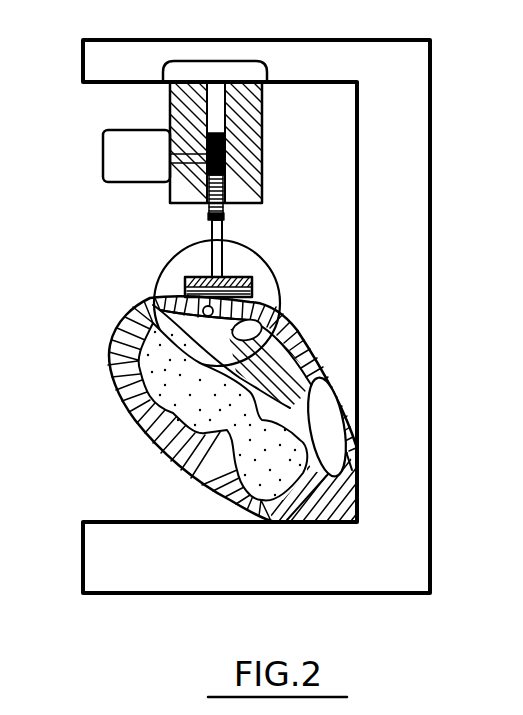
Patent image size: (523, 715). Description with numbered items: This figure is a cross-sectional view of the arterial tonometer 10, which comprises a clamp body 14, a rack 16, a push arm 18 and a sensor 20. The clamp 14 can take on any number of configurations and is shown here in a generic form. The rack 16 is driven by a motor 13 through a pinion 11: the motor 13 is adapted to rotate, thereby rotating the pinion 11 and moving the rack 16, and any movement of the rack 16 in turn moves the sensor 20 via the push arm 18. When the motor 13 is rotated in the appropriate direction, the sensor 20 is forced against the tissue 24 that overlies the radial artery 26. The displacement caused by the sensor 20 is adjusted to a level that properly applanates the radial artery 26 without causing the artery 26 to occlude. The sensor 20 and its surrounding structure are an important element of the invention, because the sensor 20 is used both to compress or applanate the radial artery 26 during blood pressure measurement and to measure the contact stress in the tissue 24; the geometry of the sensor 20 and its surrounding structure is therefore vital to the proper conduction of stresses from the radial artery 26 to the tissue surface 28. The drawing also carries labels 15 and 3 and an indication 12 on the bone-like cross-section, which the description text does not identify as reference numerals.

The arterial tonometer 10 is at (272, 34).
The pinion 11 is at (221, 134).
The bone 12 is at (122, 429).
The motor 13 is at (103, 158).
The clamp body 14 is at (418, 261).
The screw head 15 is at (203, 157).
The rack 16 is at (227, 213).
The push arm 18 is at (220, 258).
The sensor 20 is at (203, 270).
The detail circle FIG. 3 is at (190, 247).
The tissue 24 is at (185, 302).
The radial artery 26 is at (203, 310).
The tissue surface 28 is at (250, 308).